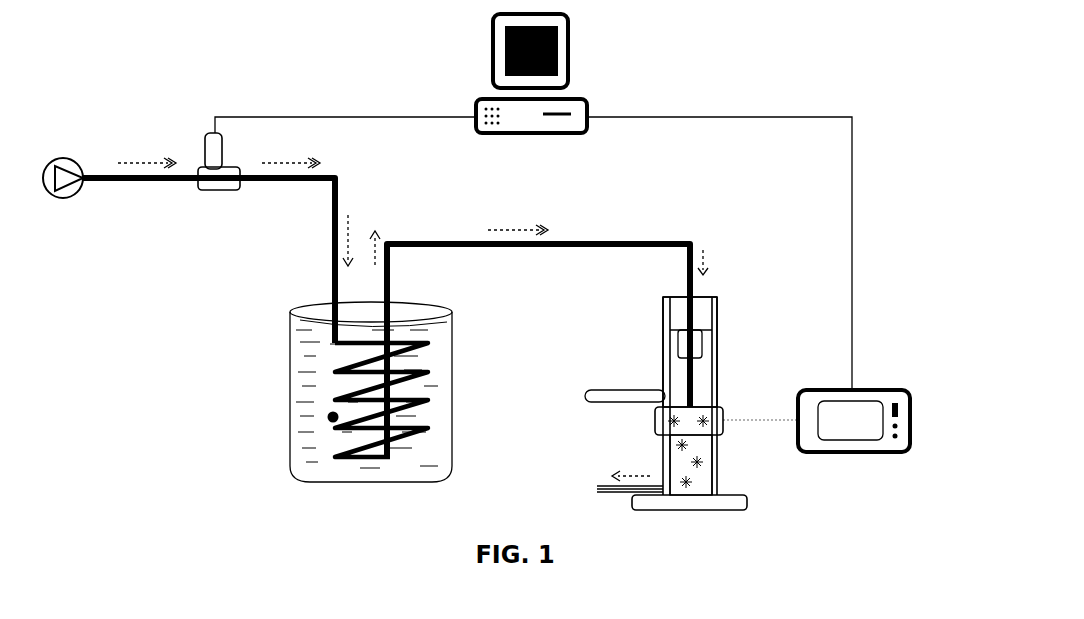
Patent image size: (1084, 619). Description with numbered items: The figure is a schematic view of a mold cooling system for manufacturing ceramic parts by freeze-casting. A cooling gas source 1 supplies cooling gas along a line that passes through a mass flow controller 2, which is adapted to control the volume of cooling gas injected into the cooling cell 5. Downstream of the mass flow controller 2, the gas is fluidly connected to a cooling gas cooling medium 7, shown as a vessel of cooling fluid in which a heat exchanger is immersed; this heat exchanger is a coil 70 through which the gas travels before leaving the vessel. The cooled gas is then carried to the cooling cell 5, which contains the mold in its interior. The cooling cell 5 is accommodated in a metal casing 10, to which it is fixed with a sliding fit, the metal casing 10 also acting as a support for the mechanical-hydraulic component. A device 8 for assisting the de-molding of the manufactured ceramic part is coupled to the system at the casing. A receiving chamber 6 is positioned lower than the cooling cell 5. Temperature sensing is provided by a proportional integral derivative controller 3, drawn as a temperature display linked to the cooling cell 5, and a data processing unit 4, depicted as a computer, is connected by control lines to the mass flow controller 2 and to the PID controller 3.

The cooling gas source 1 is at (66, 157).
The mass flow controller 2 is at (219, 193).
The proportional integral derivative (PID) controller 3 is at (908, 418).
The data processing unit 4 is at (570, 47).
The cooling cell 5 is at (655, 420).
The receiving chamber 6 is at (700, 463).
The cooling gas cooling medium 7 is at (322, 385).
The coil 70 is at (333, 417).
The device for assisting de-molding 8 is at (703, 372).
The metal casing 10 is at (720, 312).